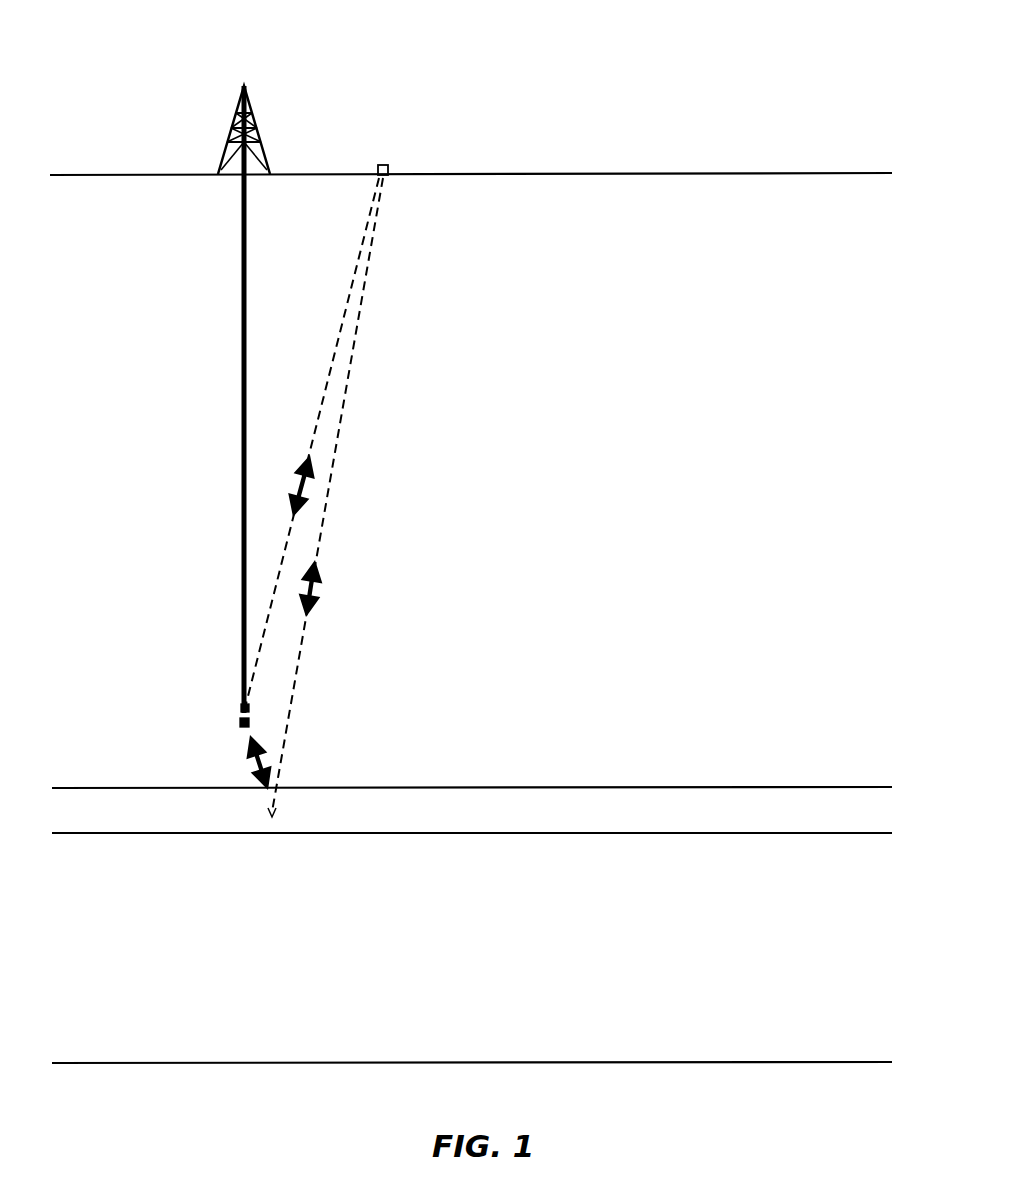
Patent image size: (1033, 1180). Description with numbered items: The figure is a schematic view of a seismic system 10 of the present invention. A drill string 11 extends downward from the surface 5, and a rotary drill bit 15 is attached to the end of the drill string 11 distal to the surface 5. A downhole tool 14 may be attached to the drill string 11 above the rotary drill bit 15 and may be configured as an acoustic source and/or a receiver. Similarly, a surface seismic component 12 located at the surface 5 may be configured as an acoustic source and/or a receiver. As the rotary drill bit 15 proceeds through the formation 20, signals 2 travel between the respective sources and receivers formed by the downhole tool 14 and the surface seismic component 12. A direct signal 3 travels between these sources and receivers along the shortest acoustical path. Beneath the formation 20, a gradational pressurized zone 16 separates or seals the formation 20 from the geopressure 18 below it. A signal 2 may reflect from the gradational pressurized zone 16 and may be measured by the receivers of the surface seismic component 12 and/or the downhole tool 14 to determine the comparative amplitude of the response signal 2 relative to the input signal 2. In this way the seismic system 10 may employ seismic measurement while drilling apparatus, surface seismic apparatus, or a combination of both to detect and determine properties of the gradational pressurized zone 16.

The signals 2 is at (316, 588).
The direct signal 3 is at (313, 490).
The surface 5 is at (626, 174).
The seismic system 10 is at (580, 75).
The drill string 11 is at (242, 490).
The surface seismic component 12 is at (380, 166).
The downhole tool 14 is at (241, 708).
The rotary drill bit 15 is at (241, 727).
The gradational pressurized zone 16 is at (465, 823).
The geopressure 18 is at (466, 927).
The formation 20 is at (596, 557).